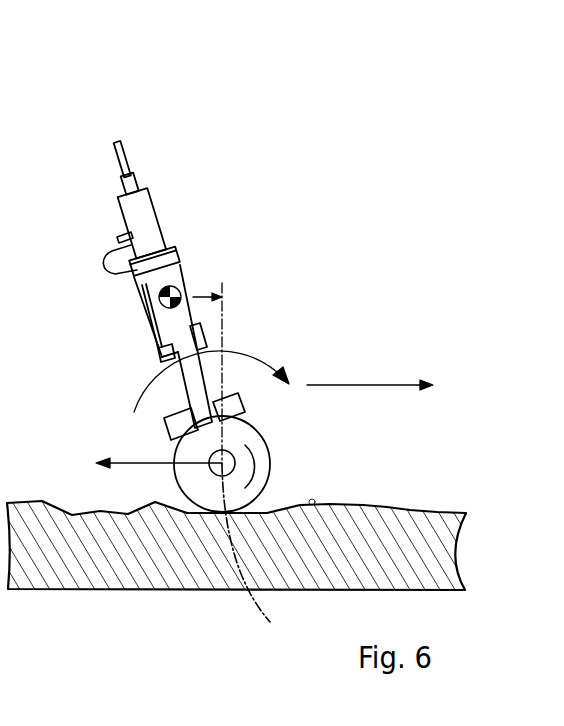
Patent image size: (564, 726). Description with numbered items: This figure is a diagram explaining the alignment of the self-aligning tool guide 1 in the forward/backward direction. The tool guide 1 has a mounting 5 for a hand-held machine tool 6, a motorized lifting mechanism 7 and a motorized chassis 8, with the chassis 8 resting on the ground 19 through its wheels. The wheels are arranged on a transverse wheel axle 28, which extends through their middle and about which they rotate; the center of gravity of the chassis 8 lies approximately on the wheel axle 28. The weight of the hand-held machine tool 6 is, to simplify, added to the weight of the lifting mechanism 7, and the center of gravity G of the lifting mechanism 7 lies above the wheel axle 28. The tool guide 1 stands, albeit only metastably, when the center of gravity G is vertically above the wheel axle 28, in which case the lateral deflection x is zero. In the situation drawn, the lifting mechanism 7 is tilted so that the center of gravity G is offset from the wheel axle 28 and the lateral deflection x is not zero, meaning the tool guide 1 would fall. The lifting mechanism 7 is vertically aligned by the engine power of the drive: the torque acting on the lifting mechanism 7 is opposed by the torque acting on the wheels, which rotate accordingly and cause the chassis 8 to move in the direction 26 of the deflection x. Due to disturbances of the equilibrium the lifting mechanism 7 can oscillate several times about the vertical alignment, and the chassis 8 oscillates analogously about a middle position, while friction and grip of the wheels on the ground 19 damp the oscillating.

The self-aligning tool guide 1 is at (67, 135).
The hand-held machine tool 6 is at (153, 233).
The center of gravity G is at (163, 297).
The motorized lifting mechanism 7 is at (185, 343).
The motorized chassis 8 is at (184, 452).
The ground 19 is at (367, 502).
The direction of the deflection 26 is at (367, 380).
The wheel axle 28 is at (252, 559).
The lateral deflection x is at (197, 292).
The mounting 5 is at (2, 657).